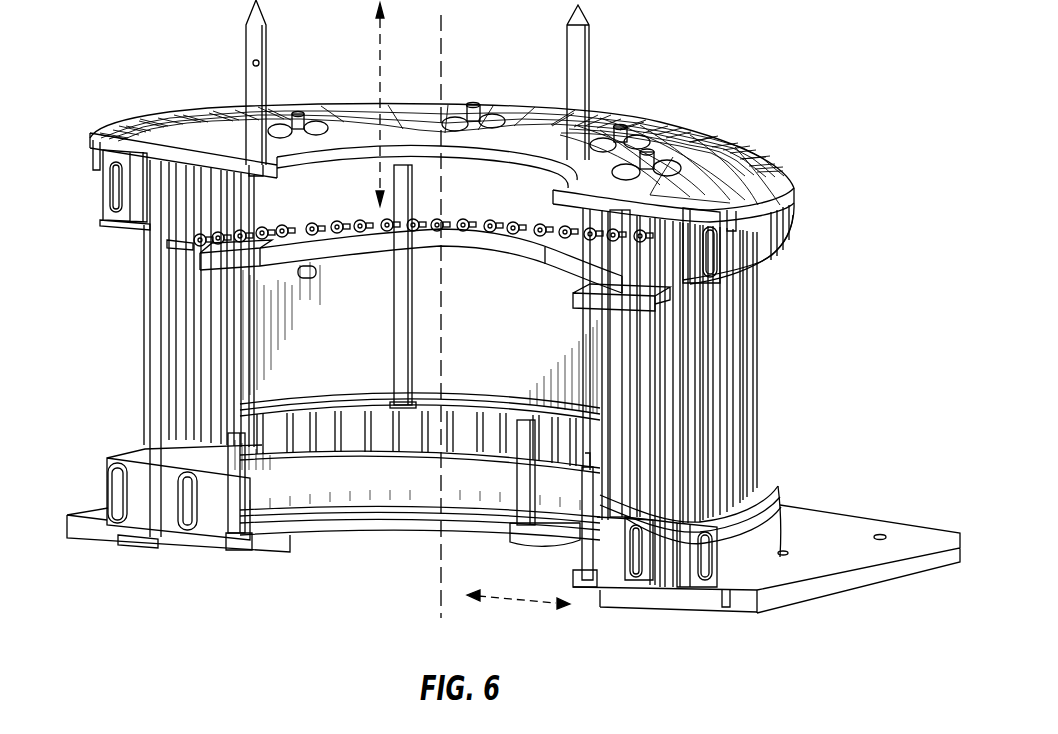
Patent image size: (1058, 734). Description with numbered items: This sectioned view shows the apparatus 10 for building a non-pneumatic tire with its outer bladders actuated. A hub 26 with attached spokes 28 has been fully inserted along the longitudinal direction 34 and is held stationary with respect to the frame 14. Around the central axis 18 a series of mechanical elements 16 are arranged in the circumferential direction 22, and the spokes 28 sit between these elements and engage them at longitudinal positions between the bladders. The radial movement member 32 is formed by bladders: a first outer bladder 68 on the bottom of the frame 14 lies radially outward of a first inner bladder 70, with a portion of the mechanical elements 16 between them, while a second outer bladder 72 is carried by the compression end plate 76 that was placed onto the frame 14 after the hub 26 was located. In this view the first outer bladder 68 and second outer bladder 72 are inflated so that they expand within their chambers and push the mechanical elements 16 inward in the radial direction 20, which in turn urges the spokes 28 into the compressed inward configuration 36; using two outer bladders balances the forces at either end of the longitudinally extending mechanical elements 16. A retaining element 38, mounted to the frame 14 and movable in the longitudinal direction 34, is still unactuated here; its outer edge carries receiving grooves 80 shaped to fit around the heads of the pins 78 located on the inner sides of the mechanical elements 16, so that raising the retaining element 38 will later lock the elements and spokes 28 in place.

The apparatus 10 is at (838, 34).
The frame 14 is at (205, 535).
The mechanical elements 16 is at (657, 572).
The central axis 18 is at (438, 576).
The radial direction 20 is at (522, 603).
The circumferential direction 22 is at (815, 185).
The hub 26 is at (496, 356).
The spokes 28 is at (612, 360).
The radial movement member 32 is at (710, 553).
The longitudinal direction 34 is at (380, 47).
The inward configuration 36 is at (785, 368).
The retaining element 38 is at (515, 262).
The first outer bladder 68 is at (108, 498).
The first inner bladder 70 is at (188, 503).
The second outer bladder 72 is at (113, 182).
The compression end plate 76 is at (715, 133).
The pins 78 is at (320, 237).
The receiving grooves 80 is at (373, 232).